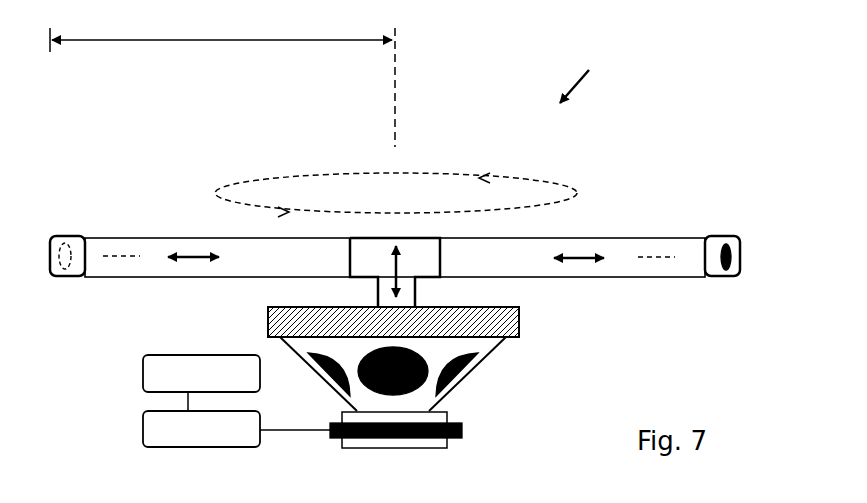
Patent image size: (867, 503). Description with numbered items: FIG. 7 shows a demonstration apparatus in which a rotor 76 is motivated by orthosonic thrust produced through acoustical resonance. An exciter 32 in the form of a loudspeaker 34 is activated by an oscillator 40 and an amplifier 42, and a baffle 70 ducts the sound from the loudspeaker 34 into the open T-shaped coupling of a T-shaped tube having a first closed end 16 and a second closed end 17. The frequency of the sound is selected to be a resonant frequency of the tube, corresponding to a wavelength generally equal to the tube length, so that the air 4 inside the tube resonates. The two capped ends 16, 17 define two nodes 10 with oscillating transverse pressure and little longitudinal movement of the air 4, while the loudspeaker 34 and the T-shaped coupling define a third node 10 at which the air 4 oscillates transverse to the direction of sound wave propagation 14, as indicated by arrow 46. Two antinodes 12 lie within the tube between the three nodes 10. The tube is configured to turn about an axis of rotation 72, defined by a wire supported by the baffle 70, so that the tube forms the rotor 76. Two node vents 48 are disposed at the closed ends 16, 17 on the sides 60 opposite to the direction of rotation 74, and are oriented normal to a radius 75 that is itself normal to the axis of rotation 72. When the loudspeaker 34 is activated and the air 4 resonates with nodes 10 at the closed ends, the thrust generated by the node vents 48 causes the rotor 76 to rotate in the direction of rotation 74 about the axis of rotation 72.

The air 4 is at (258, 262).
The node 10 is at (392, 260).
The antinode 12 is at (190, 250).
The direction of sound wave propagation 14 is at (118, 258).
The first closed end 16 is at (51, 270).
The second closed end 17 is at (737, 242).
The exciter 32 is at (440, 417).
The loudspeaker 34 is at (483, 350).
The oscillator 40 is at (201, 383).
The amplifier 42 is at (236, 429).
The arrow 46 is at (430, 262).
The node vent 48 is at (392, 260).
The side 60 is at (63, 246).
The baffle 70 is at (515, 315).
The axis of rotation 72 is at (393, 112).
The direction of rotation 74 is at (541, 179).
The radius 75 is at (182, 40).
The rotor 76 is at (580, 77).